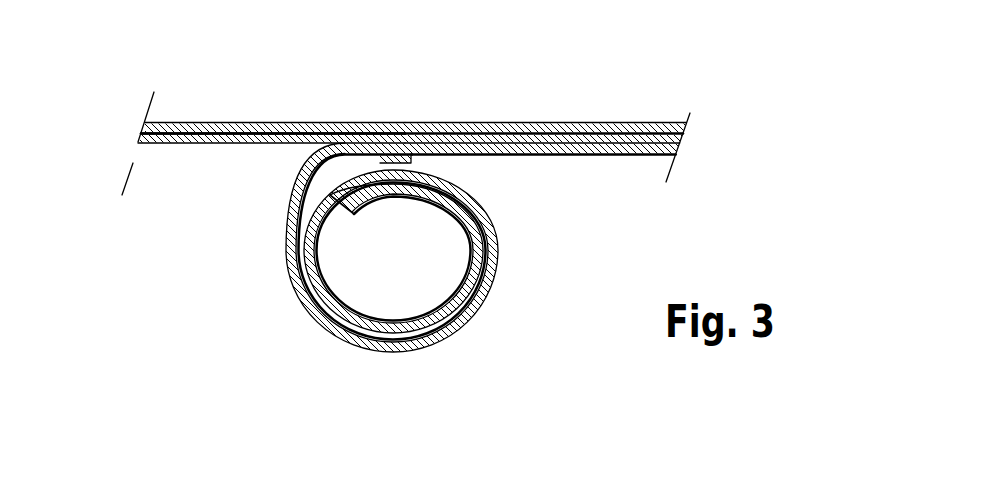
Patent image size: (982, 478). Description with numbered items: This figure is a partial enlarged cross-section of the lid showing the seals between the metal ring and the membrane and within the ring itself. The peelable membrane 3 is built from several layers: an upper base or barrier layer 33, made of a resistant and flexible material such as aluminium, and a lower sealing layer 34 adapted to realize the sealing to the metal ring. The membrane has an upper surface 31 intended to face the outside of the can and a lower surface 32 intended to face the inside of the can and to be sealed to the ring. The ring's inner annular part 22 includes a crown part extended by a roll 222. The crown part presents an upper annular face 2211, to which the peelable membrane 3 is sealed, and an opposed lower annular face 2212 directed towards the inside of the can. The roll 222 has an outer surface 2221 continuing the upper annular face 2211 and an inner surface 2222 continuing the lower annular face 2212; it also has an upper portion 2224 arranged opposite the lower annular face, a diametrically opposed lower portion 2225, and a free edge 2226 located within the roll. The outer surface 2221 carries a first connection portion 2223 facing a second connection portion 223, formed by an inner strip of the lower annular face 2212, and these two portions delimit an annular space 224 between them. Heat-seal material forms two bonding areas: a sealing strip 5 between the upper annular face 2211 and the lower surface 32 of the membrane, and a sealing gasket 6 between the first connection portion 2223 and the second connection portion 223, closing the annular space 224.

The peelable membrane 3 is at (263, 131).
The upper surface 31 is at (222, 108).
The lower surface 32 is at (184, 158).
The upper base layer 33 is at (266, 116).
The lower sealing layer 34 is at (236, 158).
The inner annular part 22 is at (547, 149).
The upper annular face 2211 is at (577, 124).
The lower annular face 2212 is at (625, 172).
The sealing strip 5 is at (651, 113).
The sealing gasket 6 is at (544, 189).
The annular space 224 is at (468, 172).
The roll 222 is at (390, 244).
The outer surface 2221 is at (386, 292).
The lower portion 2225 is at (376, 352).
The inner surface 2222 is at (498, 240).
The first connection portion 2223 is at (411, 150).
The upper portion 2224 is at (398, 111).
The free edge 2226 is at (331, 222).
The second connection portion 223 is at (379, 172).